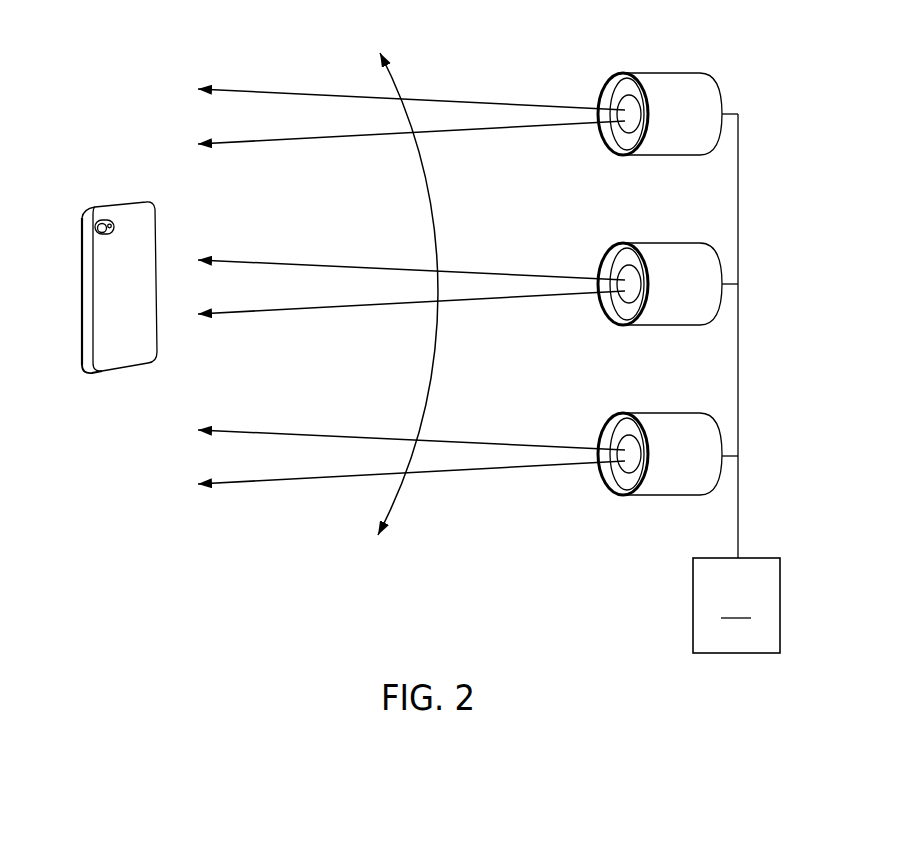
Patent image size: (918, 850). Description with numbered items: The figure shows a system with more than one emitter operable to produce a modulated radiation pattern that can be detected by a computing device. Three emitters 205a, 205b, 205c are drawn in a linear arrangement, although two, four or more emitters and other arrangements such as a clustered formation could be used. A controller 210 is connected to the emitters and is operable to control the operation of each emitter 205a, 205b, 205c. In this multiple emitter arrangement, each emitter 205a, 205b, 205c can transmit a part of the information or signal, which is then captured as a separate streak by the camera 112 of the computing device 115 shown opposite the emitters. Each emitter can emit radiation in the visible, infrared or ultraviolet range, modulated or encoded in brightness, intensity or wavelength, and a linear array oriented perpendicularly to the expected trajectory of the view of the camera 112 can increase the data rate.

The camera 112 is at (95, 227).
The computing device 115 is at (82, 290).
The emitter 205a is at (663, 73).
The emitter 205b is at (663, 243).
The emitter 205c is at (663, 413).
The controller 210 is at (736, 383).